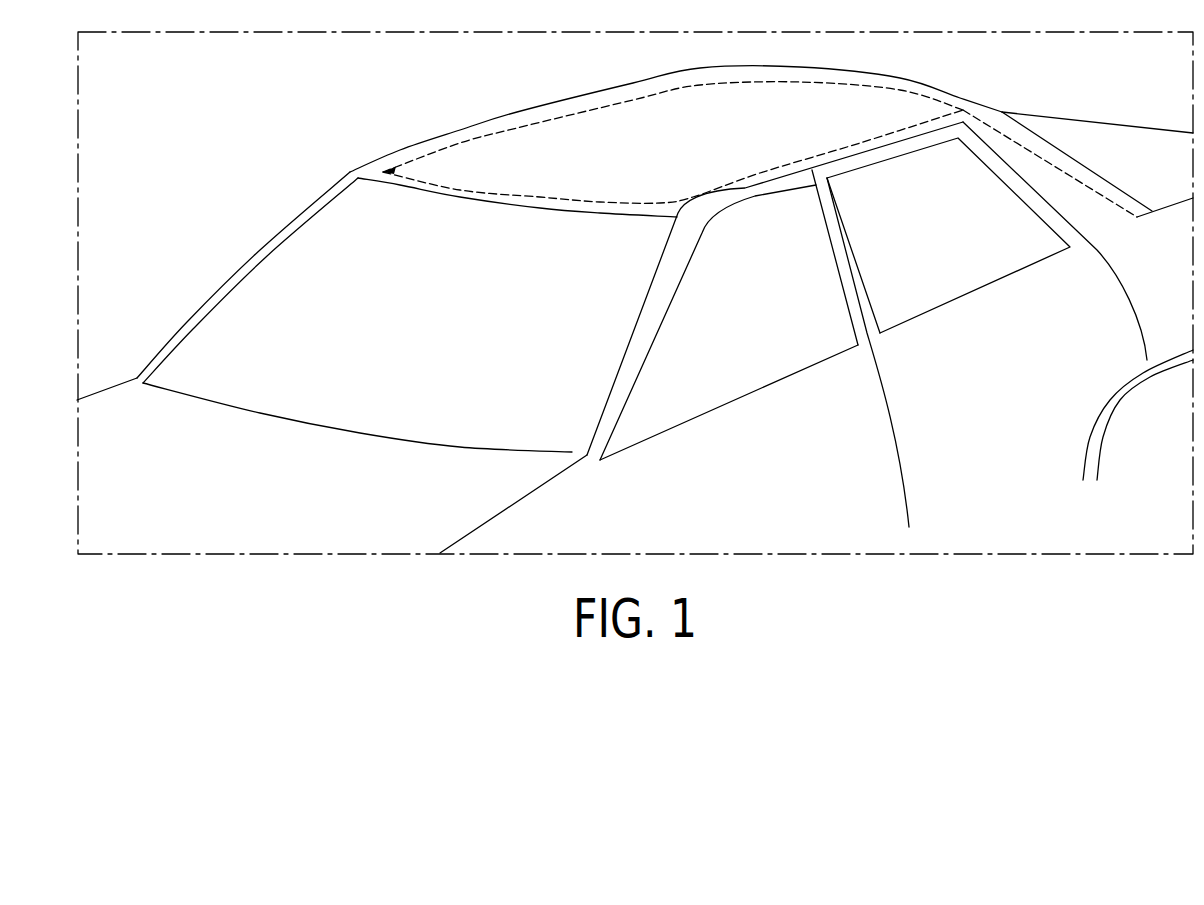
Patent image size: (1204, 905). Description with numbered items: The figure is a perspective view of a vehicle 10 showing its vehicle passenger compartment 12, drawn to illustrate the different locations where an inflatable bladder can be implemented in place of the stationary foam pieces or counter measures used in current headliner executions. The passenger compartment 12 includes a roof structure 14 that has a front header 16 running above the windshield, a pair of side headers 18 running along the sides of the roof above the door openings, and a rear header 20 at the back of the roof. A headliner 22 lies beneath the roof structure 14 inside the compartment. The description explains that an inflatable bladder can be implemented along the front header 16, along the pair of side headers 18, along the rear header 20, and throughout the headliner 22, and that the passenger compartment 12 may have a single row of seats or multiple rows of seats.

The vehicle 10 is at (176, 261).
The vehicle passenger compartment 12 is at (941, 223).
The roof structure 14 is at (729, 117).
The front header 16 is at (454, 190).
The side headers 18 is at (517, 113).
The rear header 20 is at (833, 77).
The headliner 22 is at (640, 137).